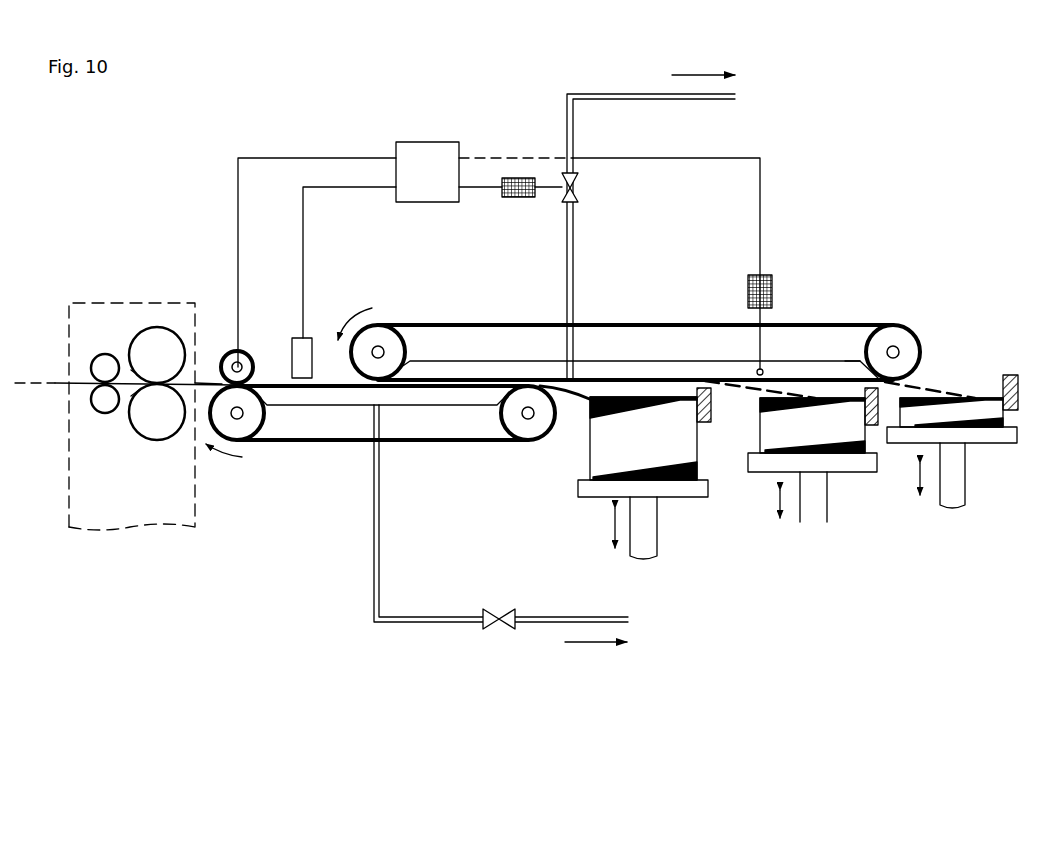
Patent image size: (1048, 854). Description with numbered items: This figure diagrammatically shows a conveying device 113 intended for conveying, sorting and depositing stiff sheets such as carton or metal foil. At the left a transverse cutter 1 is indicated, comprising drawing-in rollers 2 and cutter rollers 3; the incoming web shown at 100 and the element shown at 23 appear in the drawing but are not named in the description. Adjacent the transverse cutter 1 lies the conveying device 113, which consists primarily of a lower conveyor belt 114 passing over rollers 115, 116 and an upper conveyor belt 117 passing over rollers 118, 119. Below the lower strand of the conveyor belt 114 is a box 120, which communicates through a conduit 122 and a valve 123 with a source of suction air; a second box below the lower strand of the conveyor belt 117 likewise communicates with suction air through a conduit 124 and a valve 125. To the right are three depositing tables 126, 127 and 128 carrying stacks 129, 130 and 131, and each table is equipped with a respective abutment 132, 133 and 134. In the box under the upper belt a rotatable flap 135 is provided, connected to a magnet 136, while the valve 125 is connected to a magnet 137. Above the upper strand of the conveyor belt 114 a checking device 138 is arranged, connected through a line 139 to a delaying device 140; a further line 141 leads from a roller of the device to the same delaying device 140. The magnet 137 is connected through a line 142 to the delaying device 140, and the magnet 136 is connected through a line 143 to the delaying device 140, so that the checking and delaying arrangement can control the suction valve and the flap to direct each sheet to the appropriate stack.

The transverse cutter 1 is at (108, 303).
The drawing-in rollers 2 is at (100, 397).
The cutter rollers 3 is at (158, 397).
The web nip outlet 23 is at (203, 387).
The paper web 100 is at (53, 385).
The conveying device 113 is at (380, 469).
The conveyor belt 114 is at (448, 443).
The roller 115 is at (247, 427).
The roller 116 is at (530, 427).
The conveyor belt 117 is at (610, 322).
The roller 118 is at (397, 352).
The roller 119 is at (902, 342).
The box 120 is at (333, 395).
The conduit 122 is at (380, 578).
The valve 123 is at (493, 612).
The conduit 124 is at (573, 250).
The valve 125 is at (577, 193).
The depositing table 126 is at (607, 485).
The depositing table 127 is at (762, 463).
The depositing table 128 is at (913, 433).
The stack 129 is at (682, 448).
The stack 130 is at (852, 430).
The stack 131 is at (988, 410).
The abutment 132 is at (712, 403).
The abutment 133 is at (858, 380).
The abutment 134 is at (1007, 375).
The rotatable flap 135 is at (762, 370).
The magnet 136 is at (750, 297).
The magnet 137 is at (525, 190).
The checking device 138 is at (305, 348).
The line 139 is at (353, 187).
The delaying device 140 is at (420, 152).
The line 141 is at (290, 157).
The line 142 is at (487, 187).
The line 143 is at (650, 157).